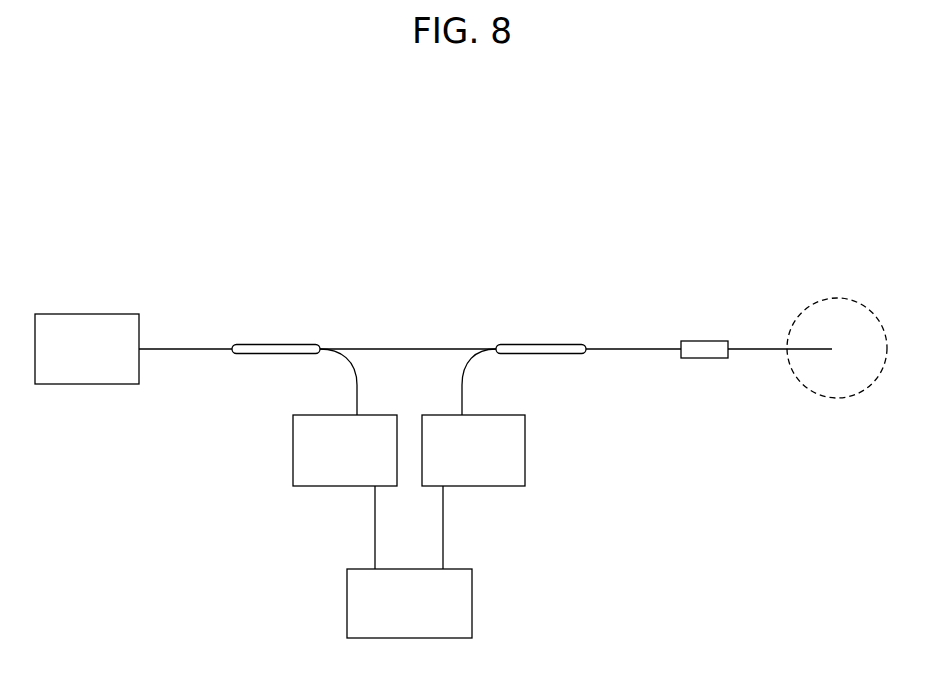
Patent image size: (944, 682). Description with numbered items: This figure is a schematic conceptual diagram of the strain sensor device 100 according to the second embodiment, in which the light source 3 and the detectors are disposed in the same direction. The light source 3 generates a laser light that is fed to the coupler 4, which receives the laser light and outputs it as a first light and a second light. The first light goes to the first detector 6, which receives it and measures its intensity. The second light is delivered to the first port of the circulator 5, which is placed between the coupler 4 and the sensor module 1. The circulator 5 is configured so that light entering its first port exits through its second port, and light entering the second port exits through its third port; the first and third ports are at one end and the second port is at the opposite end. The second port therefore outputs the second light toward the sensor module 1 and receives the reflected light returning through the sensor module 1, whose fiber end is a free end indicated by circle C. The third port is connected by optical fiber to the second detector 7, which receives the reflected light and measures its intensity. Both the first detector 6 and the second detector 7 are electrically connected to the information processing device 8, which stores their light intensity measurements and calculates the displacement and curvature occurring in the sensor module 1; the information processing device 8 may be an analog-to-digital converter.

The strain sensor device 100 is at (485, 361).
The sensor module 1 is at (717, 341).
The light source 3 is at (88, 314).
The coupler 4 is at (276, 344).
The circulator 5 is at (541, 344).
The first detector 6 is at (293, 460).
The second detector 7 is at (525, 450).
The information processing device 8 is at (472, 597).
The circle C is at (818, 292).